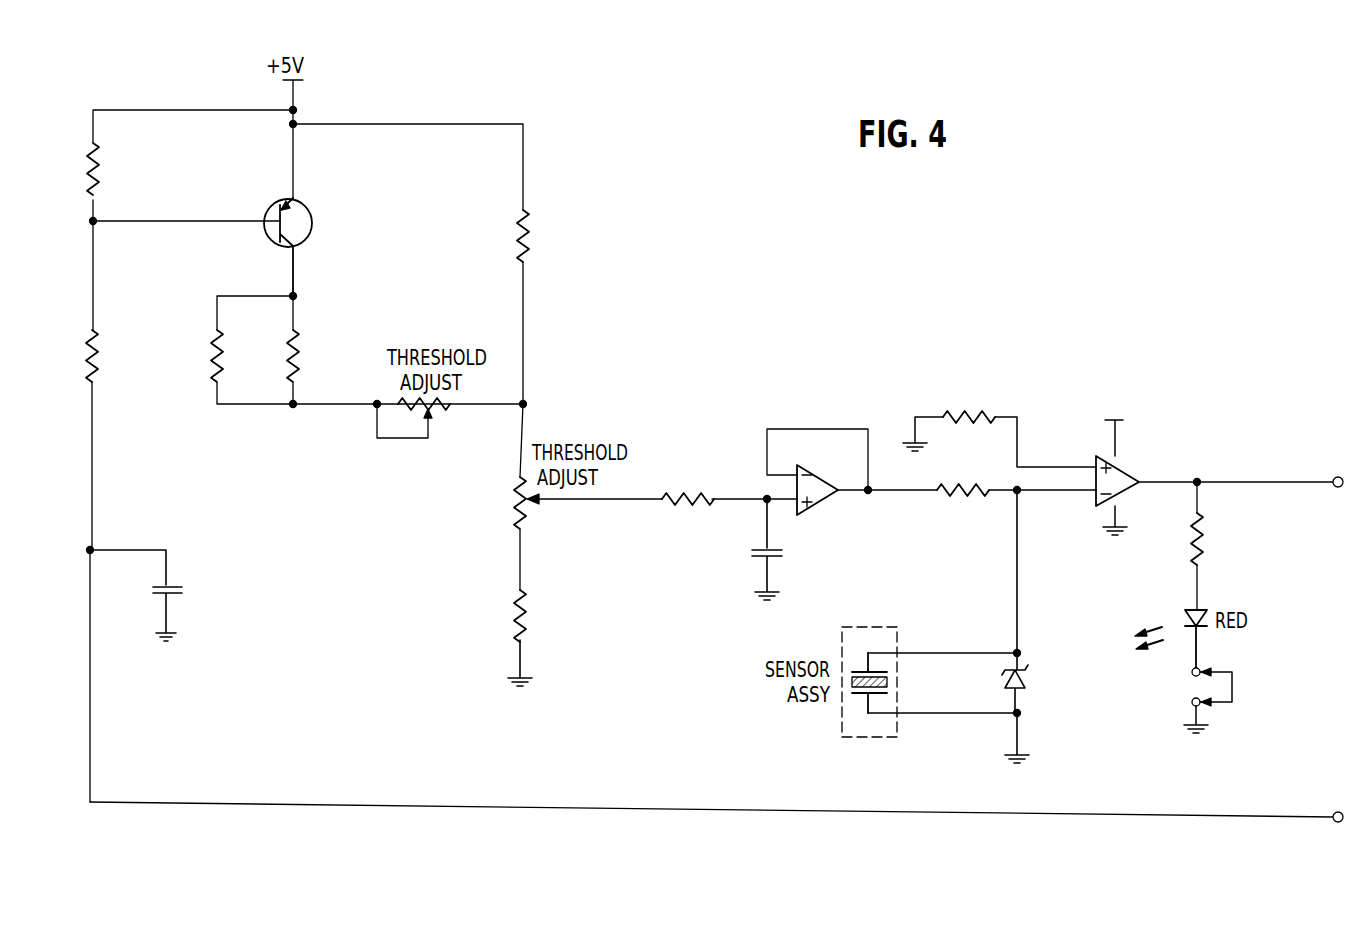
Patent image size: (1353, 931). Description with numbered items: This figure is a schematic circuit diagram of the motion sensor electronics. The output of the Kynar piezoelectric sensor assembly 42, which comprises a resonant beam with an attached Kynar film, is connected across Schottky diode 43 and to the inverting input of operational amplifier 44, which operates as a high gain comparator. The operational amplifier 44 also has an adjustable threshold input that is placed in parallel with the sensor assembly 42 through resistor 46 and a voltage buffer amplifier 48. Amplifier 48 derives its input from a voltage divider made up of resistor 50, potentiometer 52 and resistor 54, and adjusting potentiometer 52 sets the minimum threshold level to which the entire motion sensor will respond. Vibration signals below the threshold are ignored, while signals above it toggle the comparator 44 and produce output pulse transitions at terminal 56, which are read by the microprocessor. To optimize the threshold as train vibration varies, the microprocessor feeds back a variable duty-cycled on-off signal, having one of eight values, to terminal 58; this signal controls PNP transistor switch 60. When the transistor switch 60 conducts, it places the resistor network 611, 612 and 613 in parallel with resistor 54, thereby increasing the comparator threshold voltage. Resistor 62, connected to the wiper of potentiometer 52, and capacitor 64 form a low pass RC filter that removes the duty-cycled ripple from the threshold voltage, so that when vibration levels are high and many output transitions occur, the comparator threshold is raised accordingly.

The piezoelectric sensor assembly 42 is at (893, 737).
The Schottky diode 43 is at (1025, 679).
The operational amplifier 44 is at (1128, 473).
The resistor 46 is at (960, 498).
The voltage buffer amplifier 48 is at (820, 505).
The resistor 50 is at (530, 614).
The potentiometer 52 is at (515, 501).
The resistor 54 is at (530, 229).
The terminal 56 is at (1333, 478).
The terminal 58 is at (1333, 812).
The PNP transistor switch 60 is at (310, 207).
The resistor 611 is at (438, 418).
The resistor 612 is at (210, 346).
The resistor 613 is at (298, 348).
The resistor 62 is at (673, 492).
The capacitor 64 is at (751, 552).